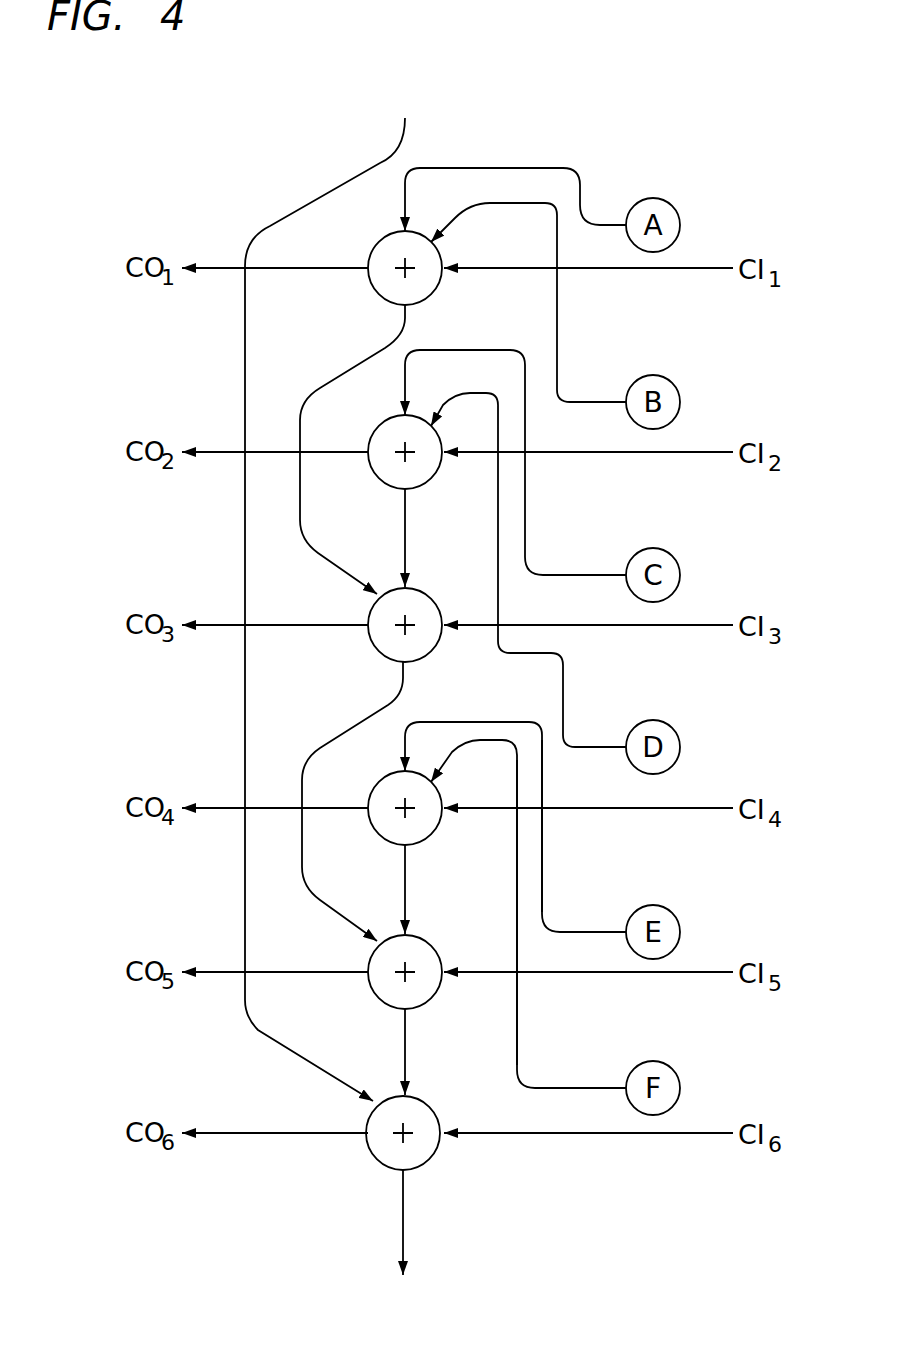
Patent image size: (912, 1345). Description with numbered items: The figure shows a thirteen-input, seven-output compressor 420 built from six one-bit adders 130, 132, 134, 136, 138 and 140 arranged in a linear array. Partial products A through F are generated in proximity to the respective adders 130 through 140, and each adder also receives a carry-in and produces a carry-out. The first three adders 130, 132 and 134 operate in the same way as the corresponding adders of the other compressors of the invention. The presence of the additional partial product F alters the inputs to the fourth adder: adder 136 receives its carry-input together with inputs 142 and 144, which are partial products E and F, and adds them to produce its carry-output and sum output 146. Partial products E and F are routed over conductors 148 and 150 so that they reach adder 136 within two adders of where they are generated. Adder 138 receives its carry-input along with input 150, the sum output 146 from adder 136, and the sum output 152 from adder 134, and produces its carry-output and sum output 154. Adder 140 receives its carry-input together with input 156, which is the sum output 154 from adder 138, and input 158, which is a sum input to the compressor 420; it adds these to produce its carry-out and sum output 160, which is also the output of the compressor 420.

The adder 130 is at (373, 292).
The adder 132 is at (376, 482).
The adder 134 is at (372, 647).
The adder 136 is at (378, 840).
The adder 138 is at (372, 995).
The adder 140 is at (370, 1156).
The input 142 is at (462, 722).
The input 144 is at (487, 743).
The sum output 146 is at (408, 865).
The conductor 148 is at (544, 865).
The conductor 150 is at (408, 902).
The sum output 152 is at (332, 916).
The sum output 154 is at (408, 1032).
The input 156 is at (408, 1079).
The sum input 158 is at (292, 208).
The sum output 160 is at (406, 1225).
The compressor 420 is at (593, 1235).